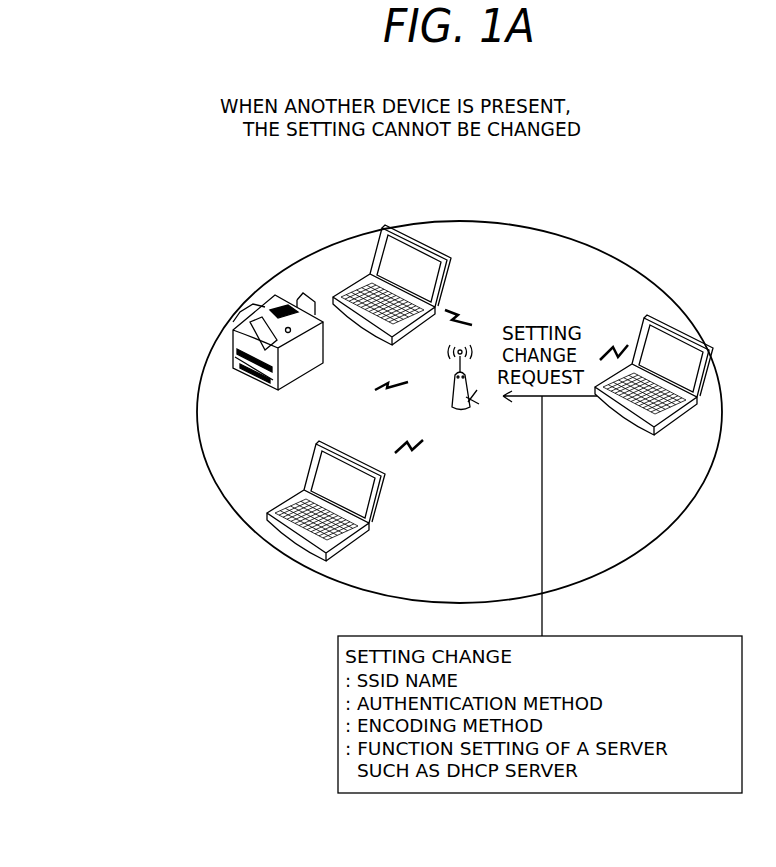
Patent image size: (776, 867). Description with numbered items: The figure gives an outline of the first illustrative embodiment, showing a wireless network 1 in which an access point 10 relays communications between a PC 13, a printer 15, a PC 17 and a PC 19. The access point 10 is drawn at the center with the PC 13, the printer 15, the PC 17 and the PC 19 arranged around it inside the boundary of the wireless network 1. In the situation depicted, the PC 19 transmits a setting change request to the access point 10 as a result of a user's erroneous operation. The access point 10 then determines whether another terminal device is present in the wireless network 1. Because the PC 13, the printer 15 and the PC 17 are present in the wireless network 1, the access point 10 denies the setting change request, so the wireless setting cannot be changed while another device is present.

The wireless network 1 is at (590, 208).
The access point 10 is at (473, 343).
The PC 13 is at (428, 247).
The printer 15 is at (303, 377).
The PC 17 is at (373, 500).
The PC 19 is at (690, 340).